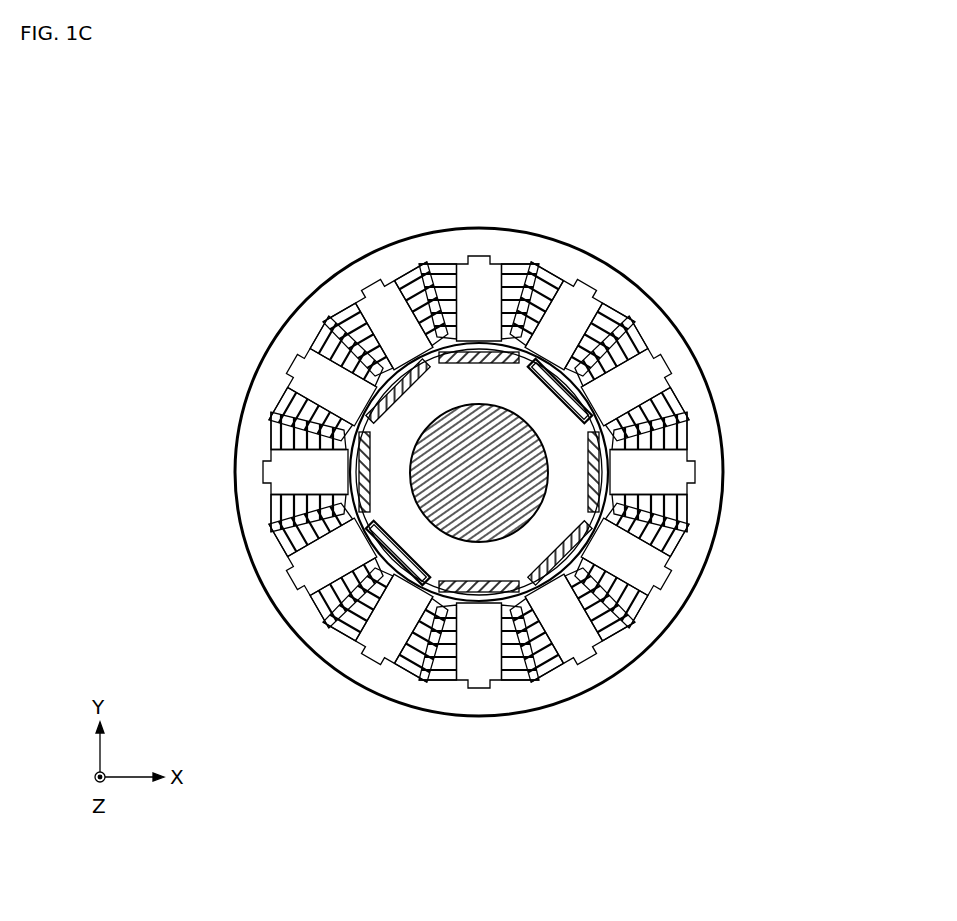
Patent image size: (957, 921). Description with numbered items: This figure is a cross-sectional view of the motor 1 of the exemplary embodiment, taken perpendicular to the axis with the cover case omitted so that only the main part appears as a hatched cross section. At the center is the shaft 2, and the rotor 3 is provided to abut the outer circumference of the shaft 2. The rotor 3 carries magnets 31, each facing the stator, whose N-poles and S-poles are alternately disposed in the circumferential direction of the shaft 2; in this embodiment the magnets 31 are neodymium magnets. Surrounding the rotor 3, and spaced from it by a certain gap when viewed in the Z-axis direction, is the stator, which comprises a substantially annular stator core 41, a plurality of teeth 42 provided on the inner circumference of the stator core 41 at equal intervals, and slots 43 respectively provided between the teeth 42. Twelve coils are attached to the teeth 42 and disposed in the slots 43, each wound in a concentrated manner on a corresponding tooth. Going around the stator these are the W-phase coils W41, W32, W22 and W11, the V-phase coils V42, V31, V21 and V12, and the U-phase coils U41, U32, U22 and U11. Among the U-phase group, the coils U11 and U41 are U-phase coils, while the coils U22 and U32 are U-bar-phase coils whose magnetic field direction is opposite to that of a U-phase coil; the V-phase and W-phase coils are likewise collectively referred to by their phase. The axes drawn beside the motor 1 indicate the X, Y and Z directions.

The motor 1 is at (262, 163).
The shaft 2 is at (424, 446).
The rotor 3 is at (388, 448).
The magnet 31 is at (452, 364).
The stator core 41 is at (652, 320).
The tooth 42 is at (479, 472).
The slot 43 is at (478, 468).
The coil W41 is at (521, 264).
The coil W32 is at (619, 313).
The coil V42 is at (680, 404).
The coil V31 is at (687, 514).
The coil U41 is at (638, 612).
The coil U32 is at (547, 673).
The coil W22 is at (437, 680).
The coil W11 is at (339, 631).
The coil V21 is at (278, 540).
The coil V12 is at (271, 430).
The coil U22 is at (320, 332).
The coil U11 is at (411, 271).